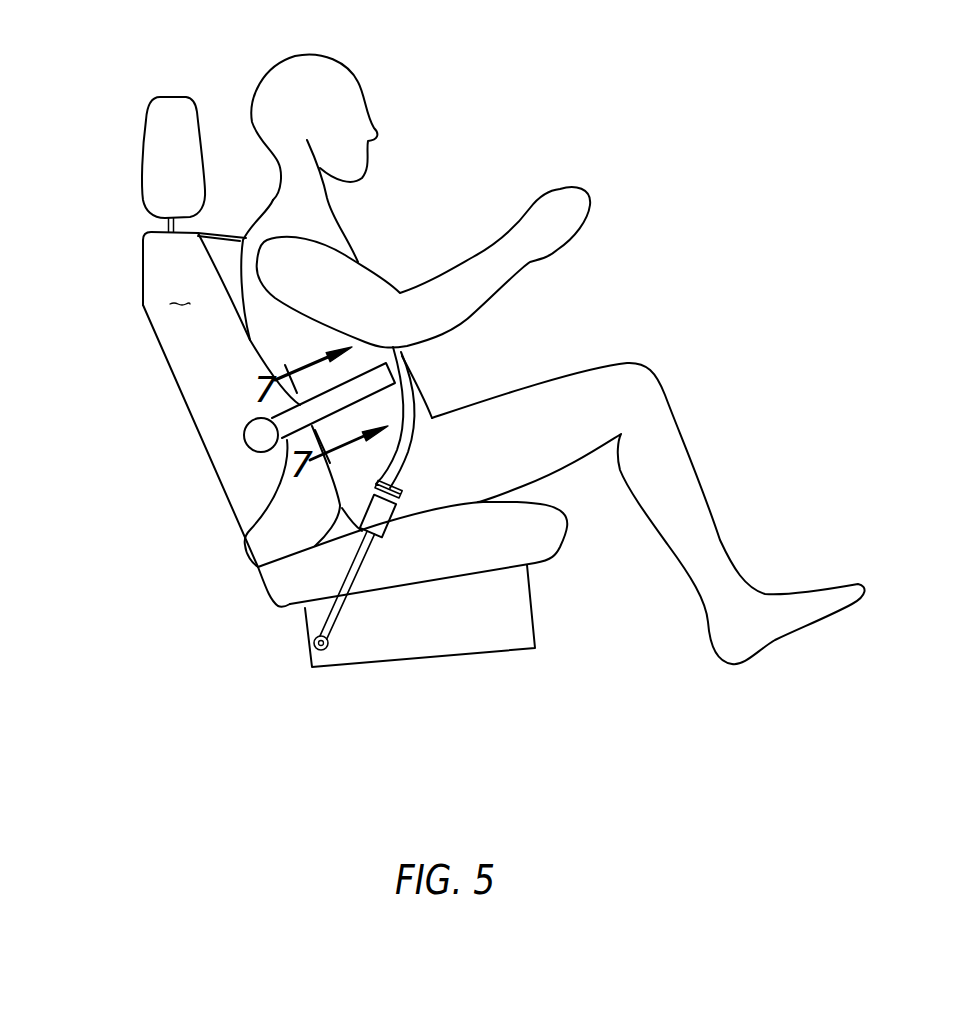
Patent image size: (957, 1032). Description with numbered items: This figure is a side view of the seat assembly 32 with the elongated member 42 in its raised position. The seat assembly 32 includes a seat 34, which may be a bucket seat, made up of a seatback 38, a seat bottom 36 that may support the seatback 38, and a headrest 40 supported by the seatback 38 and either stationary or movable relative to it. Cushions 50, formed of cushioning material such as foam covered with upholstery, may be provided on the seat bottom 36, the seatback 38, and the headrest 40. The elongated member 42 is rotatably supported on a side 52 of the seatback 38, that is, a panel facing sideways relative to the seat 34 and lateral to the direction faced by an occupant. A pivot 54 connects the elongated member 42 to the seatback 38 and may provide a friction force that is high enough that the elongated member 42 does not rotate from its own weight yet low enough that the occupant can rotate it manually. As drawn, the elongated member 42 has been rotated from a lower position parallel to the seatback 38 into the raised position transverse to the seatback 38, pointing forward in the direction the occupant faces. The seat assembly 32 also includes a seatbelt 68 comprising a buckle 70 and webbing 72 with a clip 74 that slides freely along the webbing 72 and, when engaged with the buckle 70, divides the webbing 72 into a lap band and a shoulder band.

The seat assembly 32 is at (106, 65).
The seat 34 is at (158, 383).
The seat bottom 36 is at (563, 543).
The seatback 38 is at (142, 283).
The headrest 40 is at (141, 172).
The elongated member 42 is at (240, 527).
The cushions 50 is at (263, 588).
The side 52 is at (181, 291).
The pivot 54 is at (244, 436).
The seatbelt 68 is at (421, 375).
The buckle 70 is at (387, 527).
The webbing 72 is at (412, 448).
The clip 74 is at (398, 493).